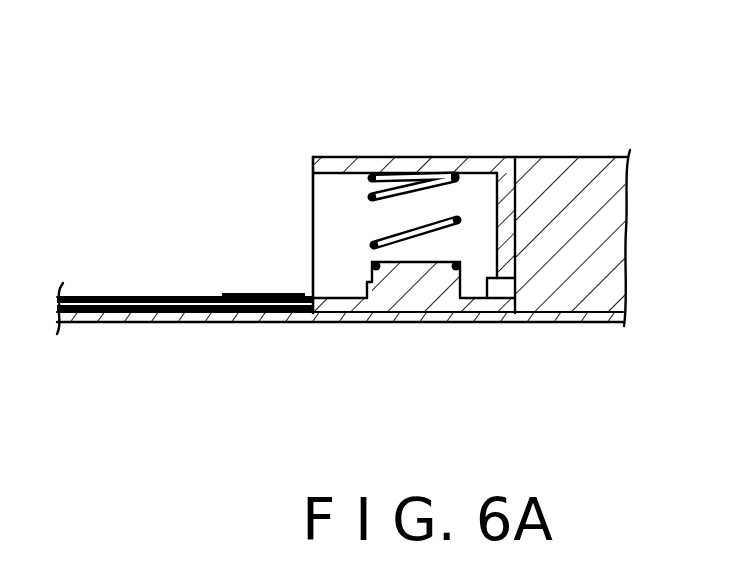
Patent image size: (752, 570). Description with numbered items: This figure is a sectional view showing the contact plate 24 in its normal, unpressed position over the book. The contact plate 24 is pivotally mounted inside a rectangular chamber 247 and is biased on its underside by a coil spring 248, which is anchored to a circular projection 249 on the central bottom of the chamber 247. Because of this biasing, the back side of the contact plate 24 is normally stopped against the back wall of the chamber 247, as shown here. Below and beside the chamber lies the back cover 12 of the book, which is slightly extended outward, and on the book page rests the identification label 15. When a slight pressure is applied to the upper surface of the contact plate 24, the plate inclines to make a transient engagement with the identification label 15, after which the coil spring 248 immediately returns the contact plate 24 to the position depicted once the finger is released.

The back cover 12 is at (232, 322).
The identification label 15 is at (252, 294).
The contact plate 24 is at (412, 157).
The rectangular chamber 247 is at (482, 197).
The coil spring 248 is at (360, 212).
The circular projection 249 is at (447, 278).